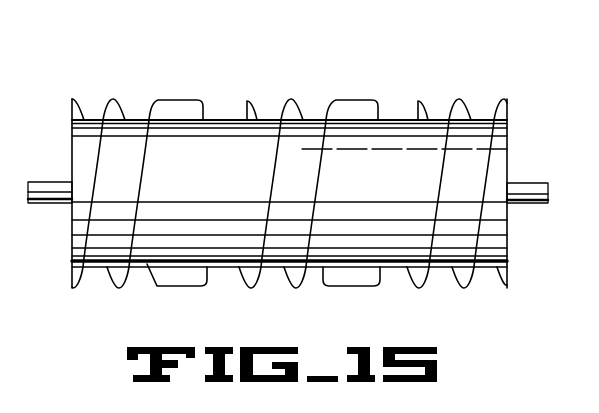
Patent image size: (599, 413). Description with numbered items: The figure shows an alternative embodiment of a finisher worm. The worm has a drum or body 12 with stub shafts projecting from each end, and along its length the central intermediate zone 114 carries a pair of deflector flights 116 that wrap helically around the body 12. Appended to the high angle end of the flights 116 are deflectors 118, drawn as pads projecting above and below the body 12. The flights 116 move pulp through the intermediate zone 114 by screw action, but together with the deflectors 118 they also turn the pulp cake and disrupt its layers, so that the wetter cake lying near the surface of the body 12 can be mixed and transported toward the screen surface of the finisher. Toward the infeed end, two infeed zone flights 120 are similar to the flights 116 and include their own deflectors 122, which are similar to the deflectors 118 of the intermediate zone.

The drum or body 12 is at (232, 119).
The central intermediate zone 114 is at (360, 83).
The deflector flights 116 is at (291, 98).
The deflectors 118 is at (378, 102).
The infeed zone flights 120 is at (113, 98).
The deflectors 122 is at (170, 99).